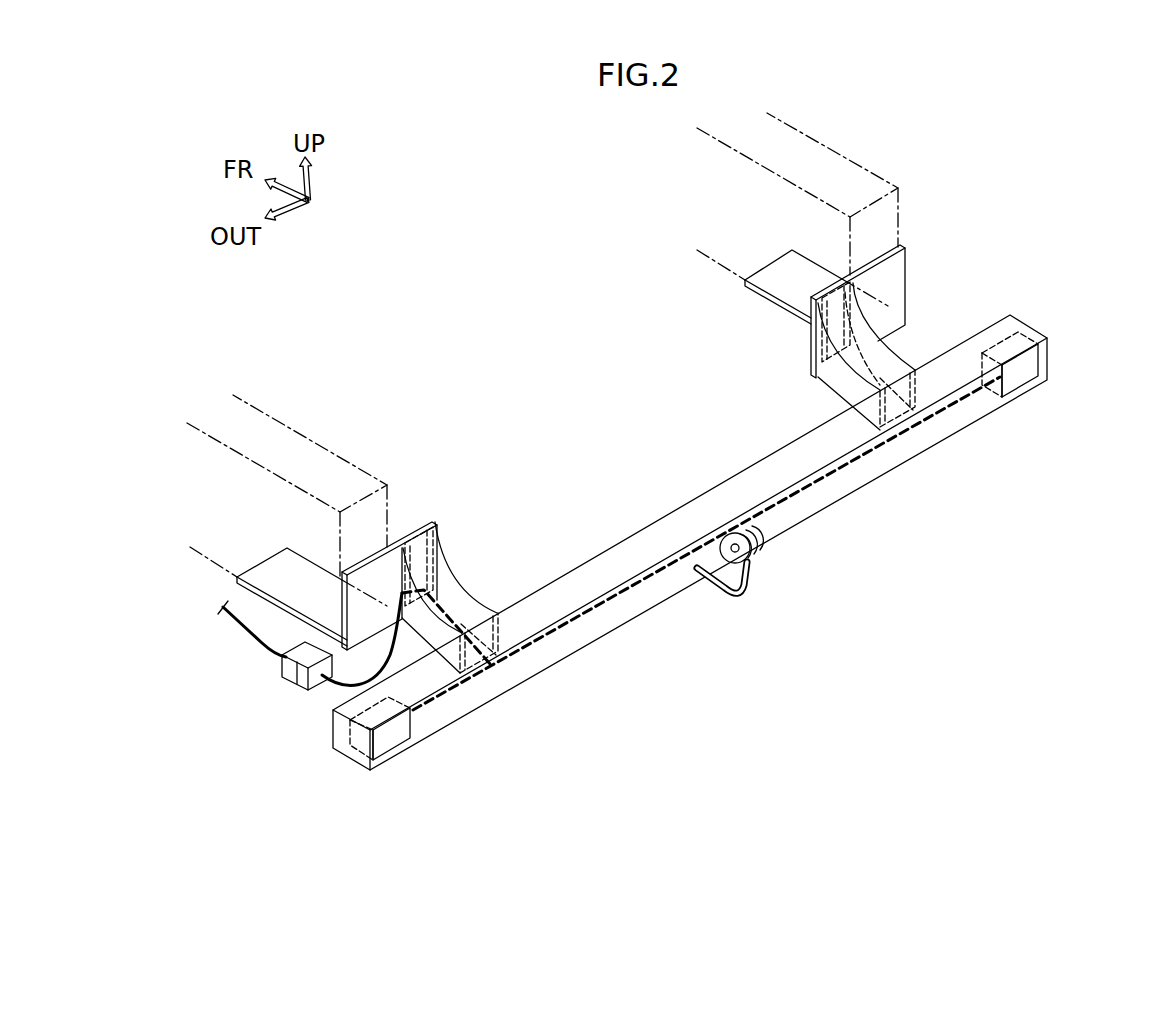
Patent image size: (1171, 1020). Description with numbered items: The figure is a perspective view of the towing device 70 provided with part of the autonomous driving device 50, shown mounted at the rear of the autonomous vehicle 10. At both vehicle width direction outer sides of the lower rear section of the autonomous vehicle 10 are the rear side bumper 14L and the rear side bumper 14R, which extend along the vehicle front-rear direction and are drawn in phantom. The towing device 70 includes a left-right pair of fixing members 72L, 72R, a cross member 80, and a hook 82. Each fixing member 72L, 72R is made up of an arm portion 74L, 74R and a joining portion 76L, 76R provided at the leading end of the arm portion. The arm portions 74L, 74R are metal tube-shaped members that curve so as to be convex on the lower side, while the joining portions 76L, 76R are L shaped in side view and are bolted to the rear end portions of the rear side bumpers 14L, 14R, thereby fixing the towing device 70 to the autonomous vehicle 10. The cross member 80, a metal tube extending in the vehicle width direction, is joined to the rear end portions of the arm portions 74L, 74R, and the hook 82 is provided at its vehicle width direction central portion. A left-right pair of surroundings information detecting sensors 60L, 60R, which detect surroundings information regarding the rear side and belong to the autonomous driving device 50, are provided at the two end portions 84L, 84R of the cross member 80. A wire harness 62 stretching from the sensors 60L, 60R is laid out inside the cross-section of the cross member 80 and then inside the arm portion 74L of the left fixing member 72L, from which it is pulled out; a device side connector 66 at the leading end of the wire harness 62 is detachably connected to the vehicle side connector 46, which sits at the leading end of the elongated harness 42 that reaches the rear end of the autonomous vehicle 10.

The autonomous vehicle 10 is at (473, 227).
The rear side bumper 14L is at (293, 430).
The rear side bumper 14R is at (887, 178).
The elongated harness 42 is at (250, 648).
The vehicle side connector 46 is at (282, 680).
The autonomous driving device 50 is at (701, 589).
The surroundings information detecting sensor 60L is at (398, 748).
The surroundings information detecting sensor 60R is at (1028, 382).
The wire harness 62 is at (337, 688).
The device side connector 66 is at (300, 692).
The towing device 70 is at (498, 752).
The fixing member 72L is at (419, 520).
The fixing member 72R is at (910, 261).
The arm portion 74L is at (467, 578).
The arm portion 74R is at (897, 355).
The joining portion 76L is at (401, 606).
The joining portion 76R is at (810, 340).
The cross member 80 is at (634, 622).
The hook 82 is at (750, 578).
The end portion 84L is at (353, 765).
The end portion 84R is at (1047, 368).